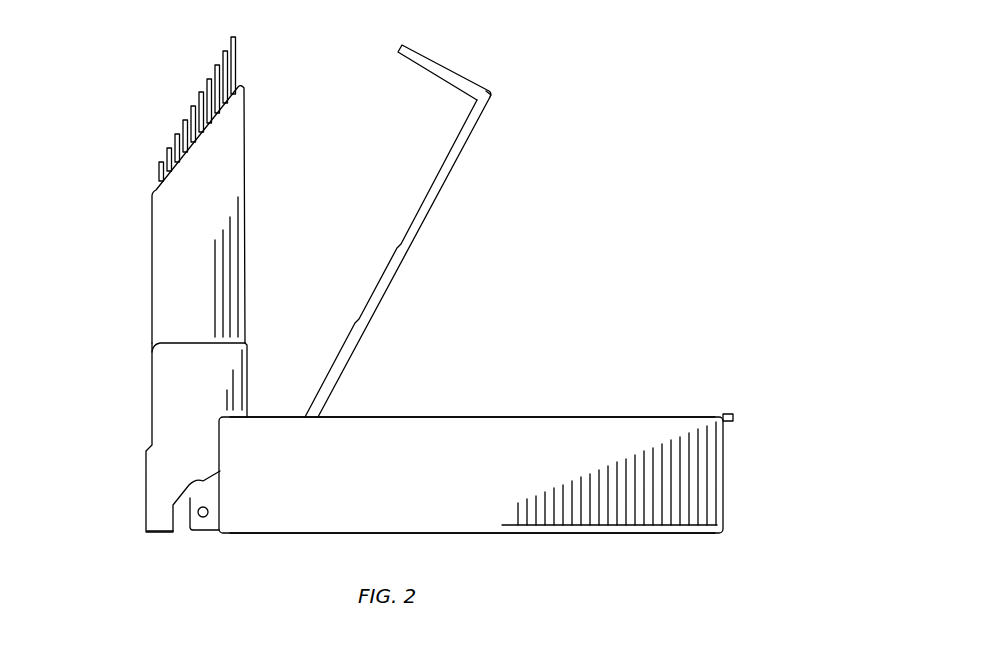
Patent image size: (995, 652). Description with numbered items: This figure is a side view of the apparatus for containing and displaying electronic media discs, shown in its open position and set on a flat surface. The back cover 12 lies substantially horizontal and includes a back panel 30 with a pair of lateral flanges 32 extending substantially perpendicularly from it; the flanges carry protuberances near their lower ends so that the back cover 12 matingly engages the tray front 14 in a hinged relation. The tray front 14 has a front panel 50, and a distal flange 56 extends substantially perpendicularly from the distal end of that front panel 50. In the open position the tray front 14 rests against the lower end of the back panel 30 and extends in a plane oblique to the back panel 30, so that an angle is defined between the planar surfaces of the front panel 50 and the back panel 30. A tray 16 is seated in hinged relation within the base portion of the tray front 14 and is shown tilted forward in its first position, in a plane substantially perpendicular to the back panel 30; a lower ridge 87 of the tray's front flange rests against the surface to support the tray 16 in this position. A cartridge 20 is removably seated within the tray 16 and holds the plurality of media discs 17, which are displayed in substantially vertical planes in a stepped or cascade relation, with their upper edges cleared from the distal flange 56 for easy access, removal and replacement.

The back cover 12 is at (676, 410).
The tray front 14 is at (494, 94).
The tray 16 is at (151, 400).
The media discs 17 is at (212, 79).
The cartridge 20 is at (151, 272).
The back panel 30 is at (528, 415).
The lateral flanges 32 is at (295, 517).
The front panel 50 is at (428, 217).
The distal flange 56 is at (436, 60).
The lower ridge 87 is at (158, 533).